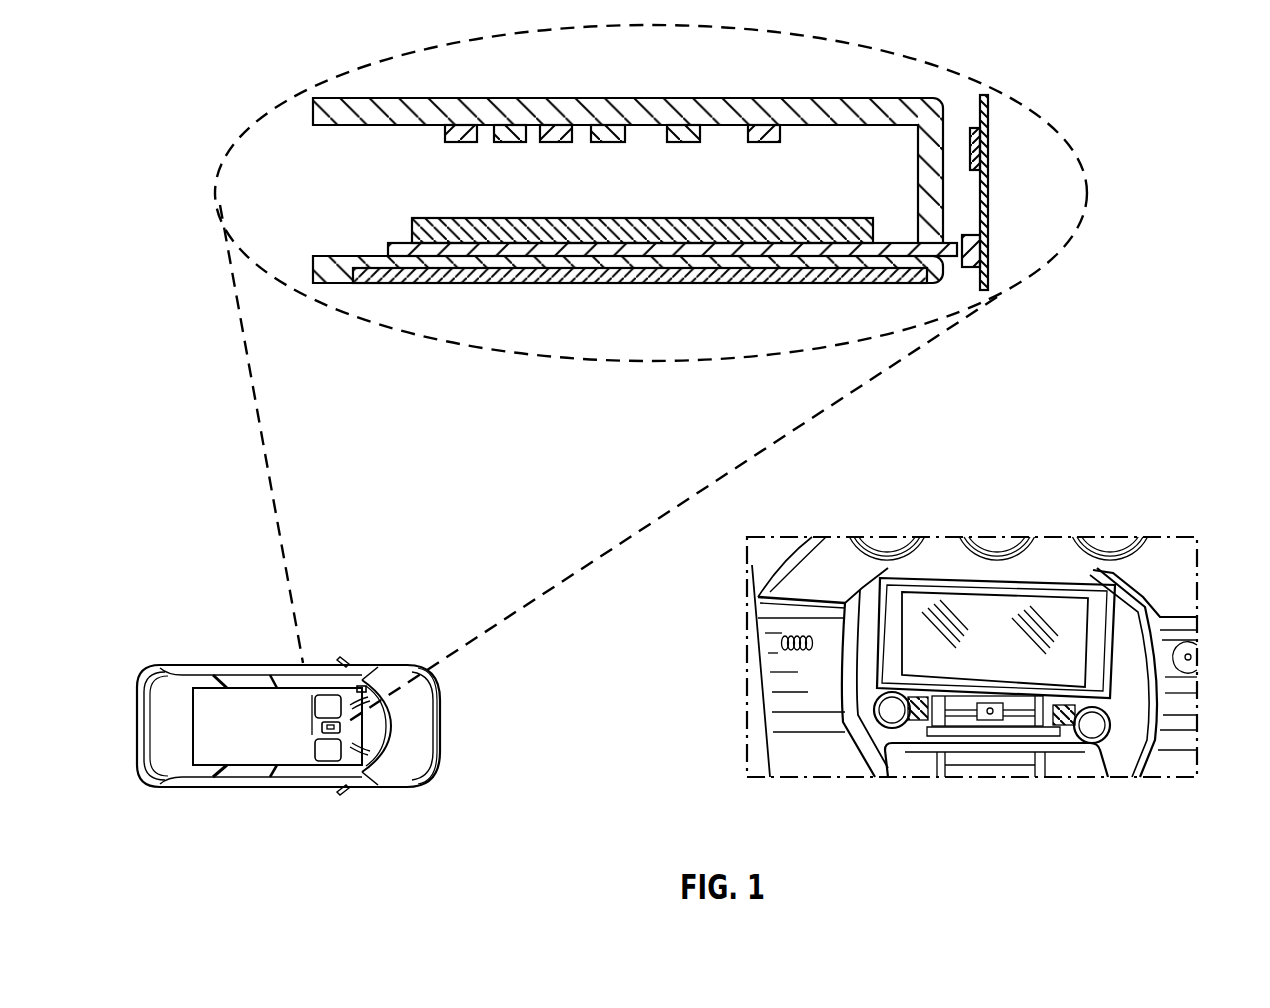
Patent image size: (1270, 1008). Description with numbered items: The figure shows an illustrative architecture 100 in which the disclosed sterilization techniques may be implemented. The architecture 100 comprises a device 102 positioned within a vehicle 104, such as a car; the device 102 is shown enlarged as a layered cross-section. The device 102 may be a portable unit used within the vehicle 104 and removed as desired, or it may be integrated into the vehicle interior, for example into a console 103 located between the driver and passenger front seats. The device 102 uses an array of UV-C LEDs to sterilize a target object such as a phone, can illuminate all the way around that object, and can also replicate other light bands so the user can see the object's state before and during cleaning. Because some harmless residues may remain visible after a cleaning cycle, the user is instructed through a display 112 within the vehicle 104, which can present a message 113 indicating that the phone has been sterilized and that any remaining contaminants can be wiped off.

The architecture 100 is at (238, 97).
The device 102 is at (737, 84).
The console 103 is at (362, 689).
The vehicle 104 is at (268, 738).
The display 112 is at (1162, 584).
The message 113 is at (1018, 606).